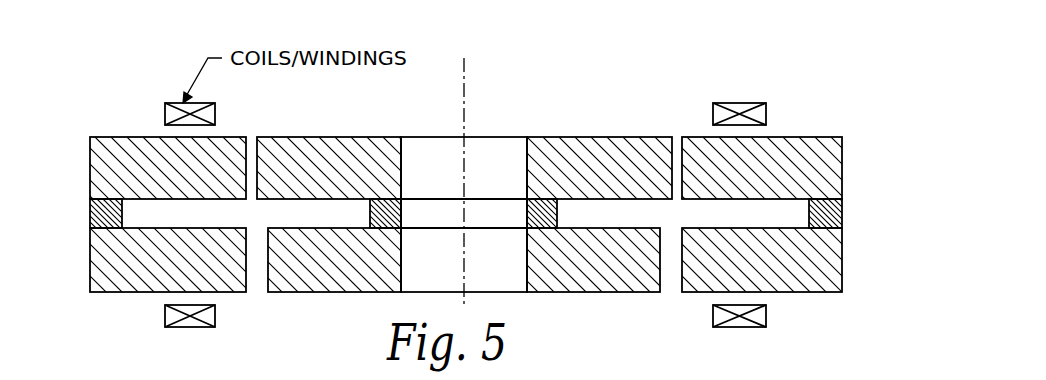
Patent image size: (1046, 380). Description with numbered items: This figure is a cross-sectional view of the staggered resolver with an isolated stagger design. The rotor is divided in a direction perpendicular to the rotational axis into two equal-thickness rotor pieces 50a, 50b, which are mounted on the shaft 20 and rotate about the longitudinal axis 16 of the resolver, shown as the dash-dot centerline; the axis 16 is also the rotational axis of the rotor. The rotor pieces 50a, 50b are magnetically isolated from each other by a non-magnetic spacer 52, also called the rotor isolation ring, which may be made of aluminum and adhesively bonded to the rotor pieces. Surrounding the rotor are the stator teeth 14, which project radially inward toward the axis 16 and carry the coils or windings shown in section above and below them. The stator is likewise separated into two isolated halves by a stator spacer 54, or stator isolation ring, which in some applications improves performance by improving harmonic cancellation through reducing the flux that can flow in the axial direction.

The stator teeth 14 is at (120, 137).
The longitudinal axis 16 is at (466, 90).
The shaft 20 is at (440, 153).
The rotor piece 50a is at (597, 137).
The rotor piece 50b is at (578, 293).
The non-magnetic spacer 52 is at (370, 213).
The stator spacer 54 is at (90, 212).